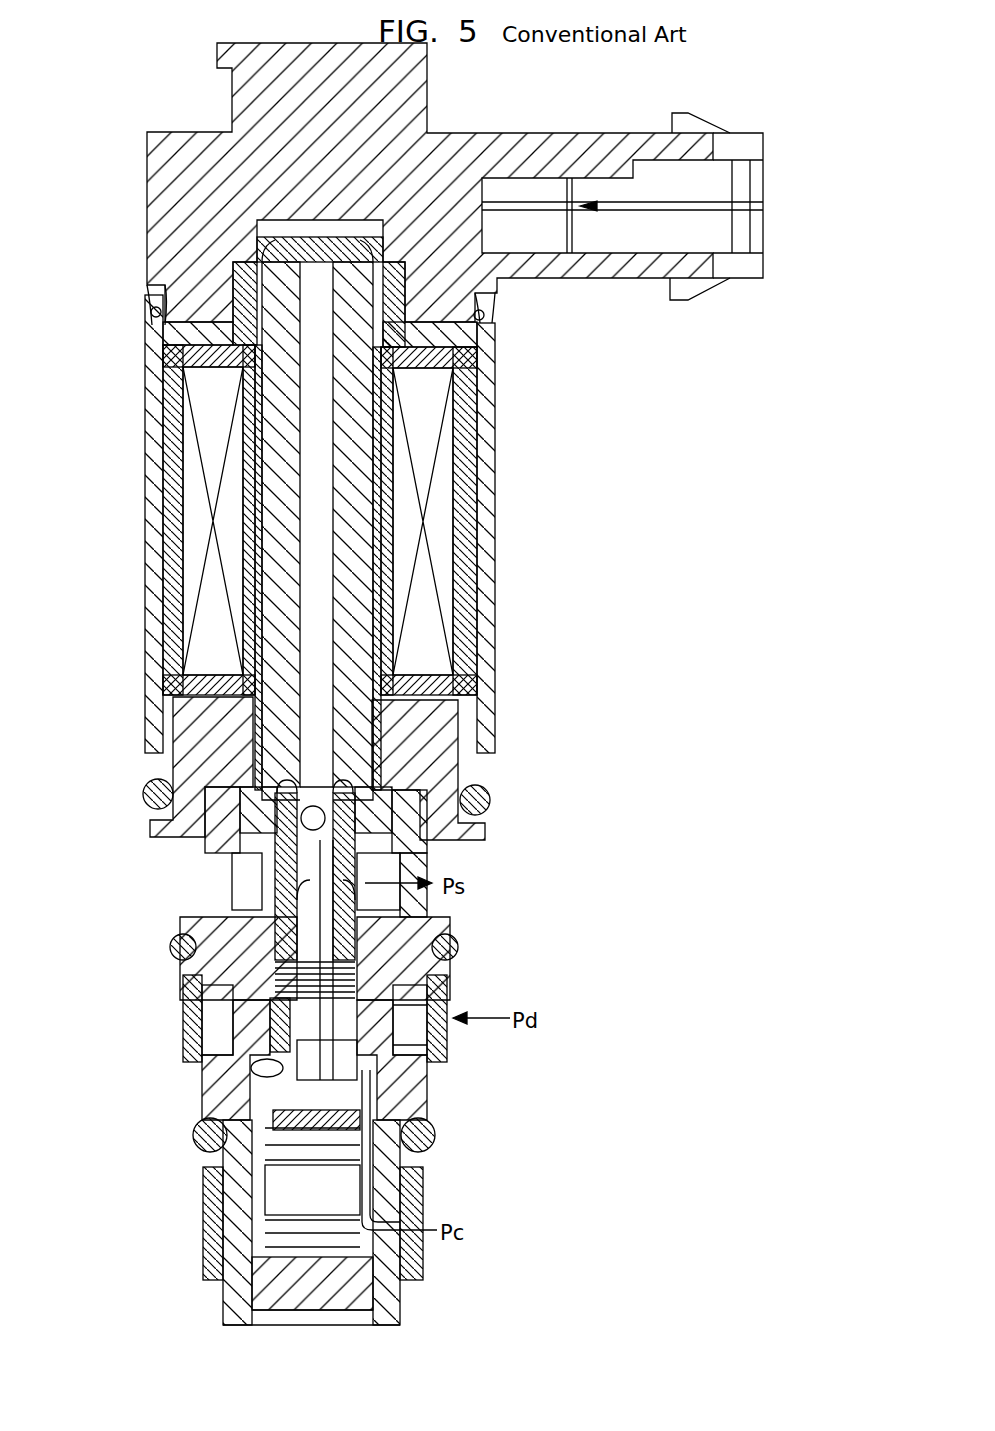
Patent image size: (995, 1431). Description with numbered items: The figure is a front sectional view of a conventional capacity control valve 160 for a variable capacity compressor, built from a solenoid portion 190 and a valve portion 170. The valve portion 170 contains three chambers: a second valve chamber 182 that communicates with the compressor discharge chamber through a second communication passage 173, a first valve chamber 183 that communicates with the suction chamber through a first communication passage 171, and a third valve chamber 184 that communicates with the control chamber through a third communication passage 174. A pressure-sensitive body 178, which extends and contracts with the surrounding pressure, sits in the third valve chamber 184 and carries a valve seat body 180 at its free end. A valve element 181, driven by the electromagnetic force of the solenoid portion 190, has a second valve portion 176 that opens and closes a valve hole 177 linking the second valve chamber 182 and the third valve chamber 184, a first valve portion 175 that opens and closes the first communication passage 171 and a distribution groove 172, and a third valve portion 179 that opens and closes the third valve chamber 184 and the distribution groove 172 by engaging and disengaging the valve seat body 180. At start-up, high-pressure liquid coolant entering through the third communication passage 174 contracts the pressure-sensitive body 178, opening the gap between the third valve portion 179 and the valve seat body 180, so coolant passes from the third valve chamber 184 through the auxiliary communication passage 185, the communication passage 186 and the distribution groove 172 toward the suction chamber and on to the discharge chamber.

The capacity control valve 160 is at (615, 430).
The solenoid portion 190 is at (125, 446).
The valve portion 170 is at (490, 956).
The first communication passage 171 is at (400, 868).
The distribution groove 172 is at (300, 883).
The second communication passage 173 is at (395, 1050).
The third communication passage 174 is at (390, 1250).
The first valve portion 175 is at (232, 848).
The second valve portion 176 is at (395, 1040).
The valve hole 177 is at (262, 1062).
The pressure-sensitive body 178 is at (210, 1180).
The third valve portion 179 is at (270, 1088).
The valve seat body 180 is at (190, 1135).
The valve element 181 is at (185, 943).
The second valve chamber 182 is at (360, 990).
The first valve chamber 183 is at (350, 905).
The third valve chamber 184 is at (240, 1245).
The auxiliary communication passage 185 is at (345, 1100).
The communication passage 186 is at (300, 1020).